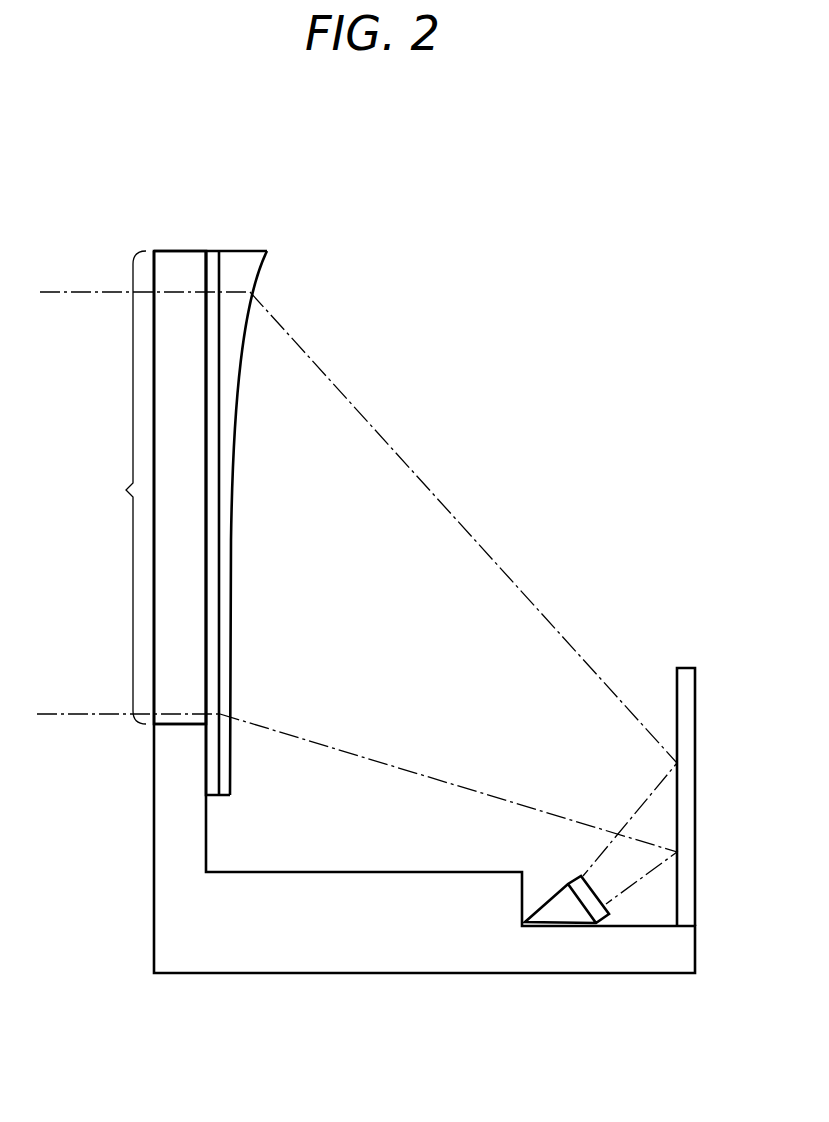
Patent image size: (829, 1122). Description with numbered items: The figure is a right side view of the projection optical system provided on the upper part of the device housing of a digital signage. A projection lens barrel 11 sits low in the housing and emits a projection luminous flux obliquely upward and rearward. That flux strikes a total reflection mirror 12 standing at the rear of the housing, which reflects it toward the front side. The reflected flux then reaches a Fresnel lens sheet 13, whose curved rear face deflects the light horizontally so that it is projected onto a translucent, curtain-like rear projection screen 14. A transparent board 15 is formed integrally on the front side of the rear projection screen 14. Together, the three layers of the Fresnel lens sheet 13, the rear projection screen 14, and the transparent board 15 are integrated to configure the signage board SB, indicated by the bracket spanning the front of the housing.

The projection lens barrel 11 is at (546, 893).
The total reflection mirror 12 is at (697, 712).
The Fresnel lens sheet 13 is at (259, 271).
The rear projection screen 14 is at (213, 259).
The transparent board 15 is at (170, 259).
The signage board SB is at (114, 487).